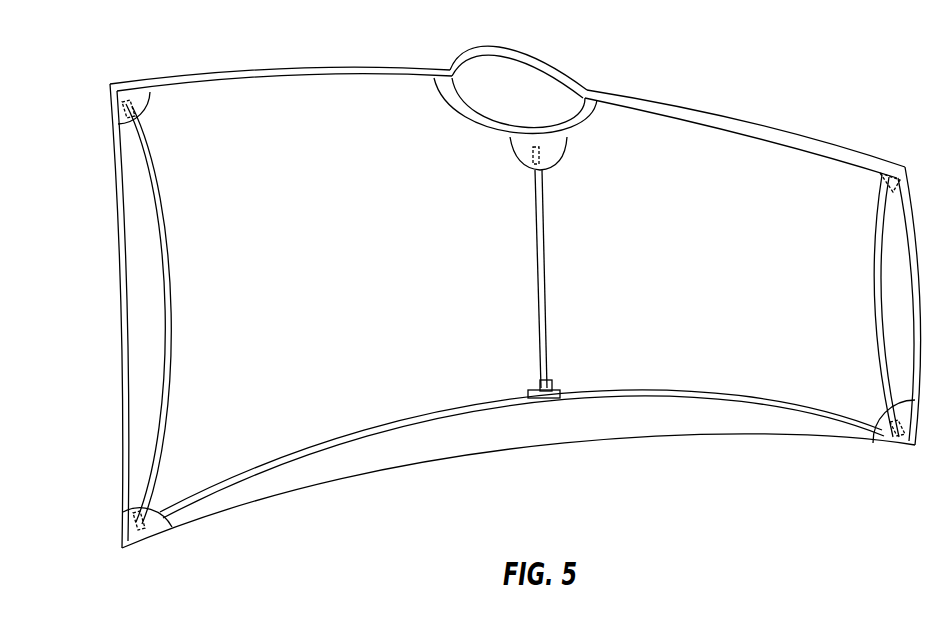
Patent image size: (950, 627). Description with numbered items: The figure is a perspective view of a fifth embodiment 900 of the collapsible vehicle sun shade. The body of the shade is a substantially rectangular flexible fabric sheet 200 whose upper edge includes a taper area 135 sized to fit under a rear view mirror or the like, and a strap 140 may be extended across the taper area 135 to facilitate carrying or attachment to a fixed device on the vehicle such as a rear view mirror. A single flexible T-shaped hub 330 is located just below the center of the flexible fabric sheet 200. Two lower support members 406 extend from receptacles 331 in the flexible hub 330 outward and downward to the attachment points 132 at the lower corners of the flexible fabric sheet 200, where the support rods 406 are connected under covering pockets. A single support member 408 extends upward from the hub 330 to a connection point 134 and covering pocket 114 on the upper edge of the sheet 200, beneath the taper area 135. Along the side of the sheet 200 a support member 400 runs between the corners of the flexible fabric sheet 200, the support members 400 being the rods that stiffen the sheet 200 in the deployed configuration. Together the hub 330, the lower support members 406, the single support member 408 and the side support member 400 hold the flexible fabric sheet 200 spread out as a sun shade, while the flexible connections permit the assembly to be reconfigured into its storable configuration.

The fifth embodiment 900 is at (106, 277).
The flexible fabric sheet 200 is at (305, 289).
The strap 140 is at (543, 62).
The taper area 135 is at (470, 102).
The covering pocket 114 is at (518, 162).
The connection point 134 is at (540, 153).
The single support member 408 is at (541, 257).
The receptacles 331 is at (551, 383).
The flexible T-shaped hub 330 is at (540, 400).
The lower support members 406 is at (367, 430).
The support members 400 is at (167, 398).
The attachment points 132 is at (140, 540).